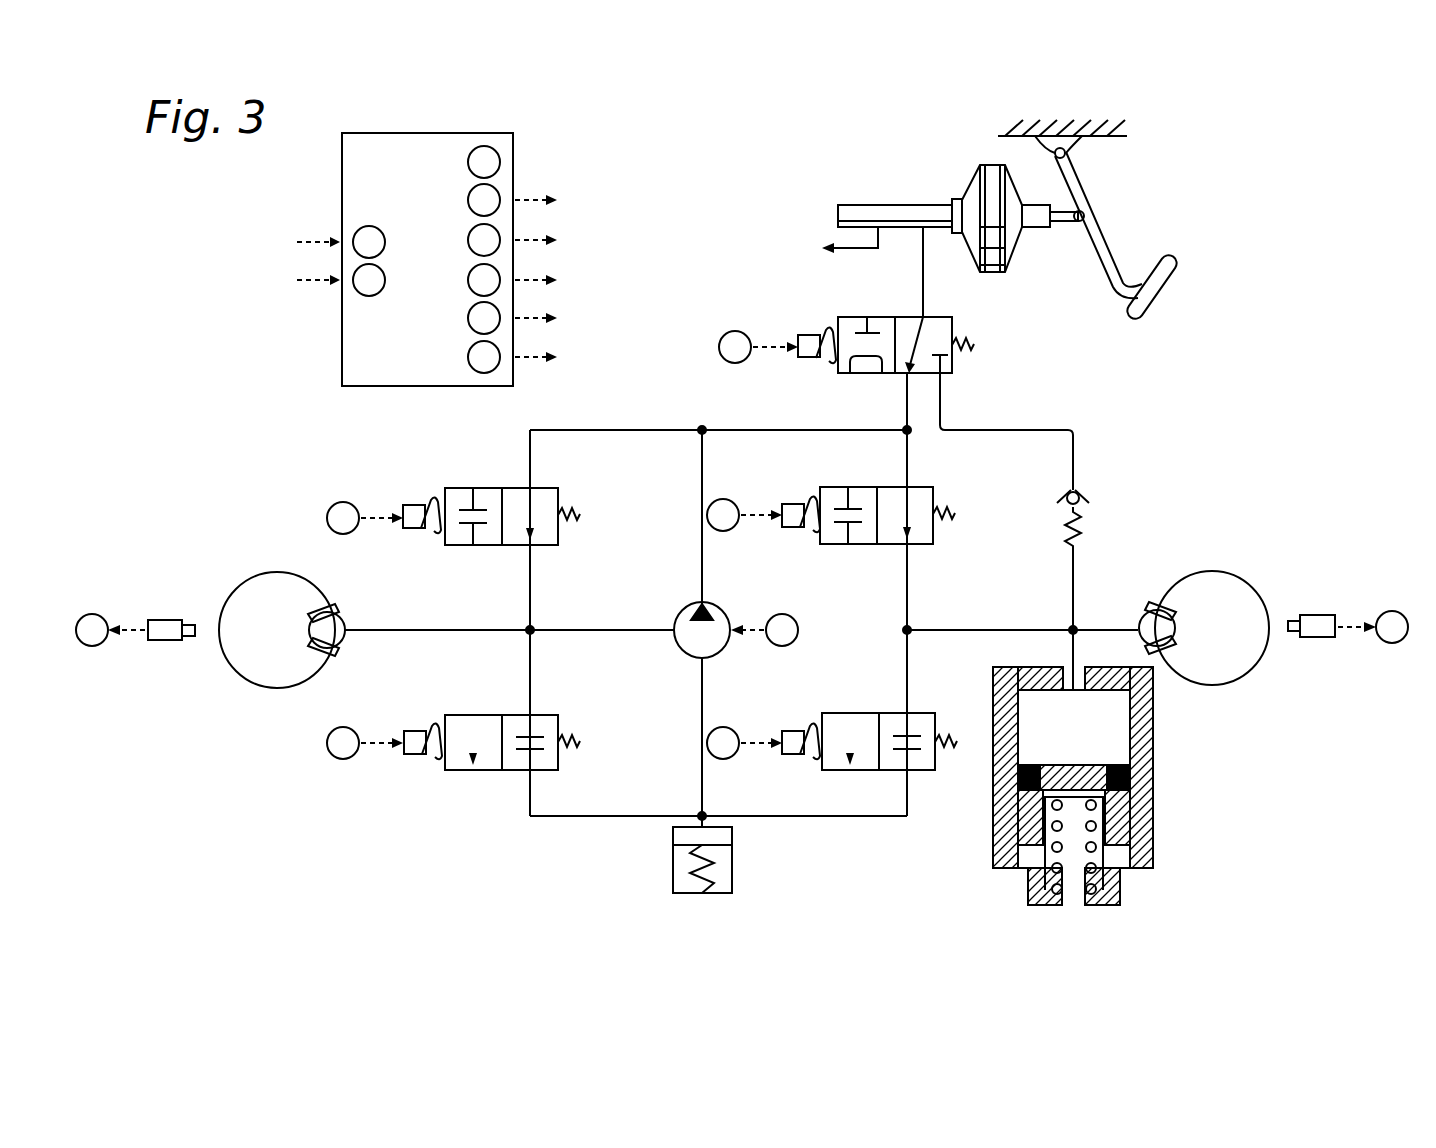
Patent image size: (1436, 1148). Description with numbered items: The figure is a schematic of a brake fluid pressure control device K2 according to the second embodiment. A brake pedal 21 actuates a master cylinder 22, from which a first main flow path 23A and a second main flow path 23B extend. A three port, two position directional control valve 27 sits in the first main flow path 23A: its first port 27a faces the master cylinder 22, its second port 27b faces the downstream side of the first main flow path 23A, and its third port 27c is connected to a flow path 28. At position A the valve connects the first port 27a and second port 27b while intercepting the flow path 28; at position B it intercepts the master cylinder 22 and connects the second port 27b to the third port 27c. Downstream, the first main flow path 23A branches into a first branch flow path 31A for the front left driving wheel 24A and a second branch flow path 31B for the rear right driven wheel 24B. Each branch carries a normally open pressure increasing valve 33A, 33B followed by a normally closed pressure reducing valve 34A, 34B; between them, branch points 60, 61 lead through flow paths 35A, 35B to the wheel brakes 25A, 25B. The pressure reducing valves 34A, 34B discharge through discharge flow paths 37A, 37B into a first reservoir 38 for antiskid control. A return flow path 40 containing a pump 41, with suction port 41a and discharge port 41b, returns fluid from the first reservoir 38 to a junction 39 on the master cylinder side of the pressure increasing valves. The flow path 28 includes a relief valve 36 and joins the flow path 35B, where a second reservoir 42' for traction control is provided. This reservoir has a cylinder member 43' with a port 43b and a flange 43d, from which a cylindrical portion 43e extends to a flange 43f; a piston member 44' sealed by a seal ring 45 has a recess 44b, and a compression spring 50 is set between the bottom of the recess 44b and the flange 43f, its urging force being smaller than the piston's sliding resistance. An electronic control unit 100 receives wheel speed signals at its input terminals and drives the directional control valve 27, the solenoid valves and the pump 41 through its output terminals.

The electronic control unit 100 is at (455, 133).
The brake fluid pressure control device K2 is at (325, 408).
The brake pedal 21 is at (1162, 300).
The master cylinder 22 is at (894, 190).
The first main flow path 23A is at (925, 278).
The second main flow path 23B is at (858, 250).
The directional control valve 27 is at (876, 339).
The first port 27a is at (921, 316).
The second port 27b is at (905, 374).
The third port 27c is at (943, 375).
The position A is at (955, 365).
The position B is at (888, 317).
The flow path 28 is at (1073, 425).
The relief valve 36 is at (1083, 490).
The junction 39 is at (702, 427).
The first branch flow path 31A is at (620, 430).
The second branch flow path 31B is at (907, 457).
The pressure increasing valve 33A is at (487, 488).
The pressure increasing valve 33B is at (930, 546).
The pressure reducing valve 34A is at (463, 772).
The pressure reducing valve 34B is at (935, 772).
The flow path 35A is at (435, 628).
The flow path 35B is at (1095, 628).
The discharge flow path 37A is at (585, 818).
The discharge flow path 37B is at (855, 818).
The first reservoir 38 is at (733, 870).
The return flow path 40 is at (705, 565).
The pump 41 is at (722, 650).
The suction port 41a is at (698, 660).
The discharge port 41b is at (700, 603).
The branch point 60 is at (540, 640).
The branch point 61 is at (903, 629).
The front left driving wheel 24A is at (297, 575).
The rear right driven wheel 24B is at (1212, 572).
The wheel brake 25A is at (342, 660).
The wheel brake 25B is at (1150, 656).
The second reservoir 42' is at (1101, 782).
The cylinder member 43' is at (1089, 782).
The port 43b is at (1063, 668).
The flange 43d is at (1025, 864).
The cylindrical portion 43e is at (1120, 887).
The flange 43f is at (1100, 901).
The piston member 44' is at (1098, 796).
The recess 44b is at (1045, 838).
The seal ring 45 is at (1135, 822).
The compression spring 50 is at (1050, 871).